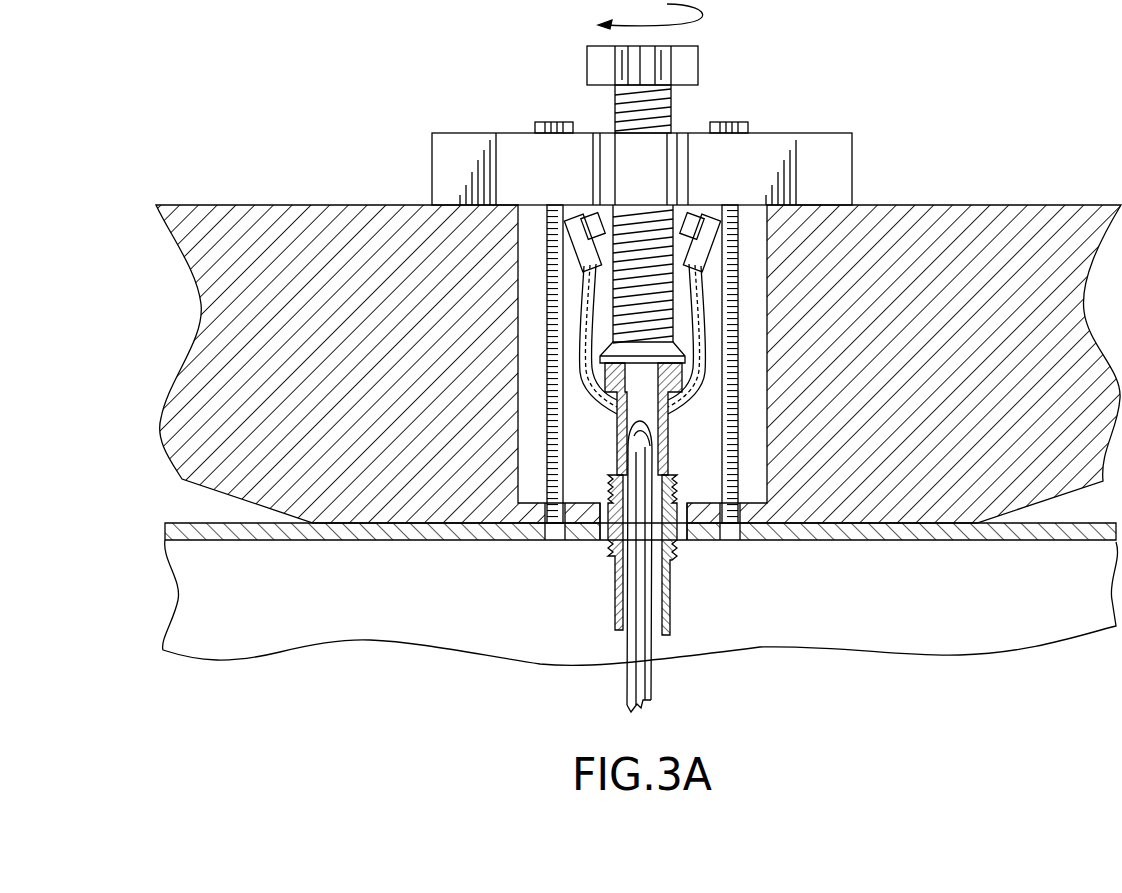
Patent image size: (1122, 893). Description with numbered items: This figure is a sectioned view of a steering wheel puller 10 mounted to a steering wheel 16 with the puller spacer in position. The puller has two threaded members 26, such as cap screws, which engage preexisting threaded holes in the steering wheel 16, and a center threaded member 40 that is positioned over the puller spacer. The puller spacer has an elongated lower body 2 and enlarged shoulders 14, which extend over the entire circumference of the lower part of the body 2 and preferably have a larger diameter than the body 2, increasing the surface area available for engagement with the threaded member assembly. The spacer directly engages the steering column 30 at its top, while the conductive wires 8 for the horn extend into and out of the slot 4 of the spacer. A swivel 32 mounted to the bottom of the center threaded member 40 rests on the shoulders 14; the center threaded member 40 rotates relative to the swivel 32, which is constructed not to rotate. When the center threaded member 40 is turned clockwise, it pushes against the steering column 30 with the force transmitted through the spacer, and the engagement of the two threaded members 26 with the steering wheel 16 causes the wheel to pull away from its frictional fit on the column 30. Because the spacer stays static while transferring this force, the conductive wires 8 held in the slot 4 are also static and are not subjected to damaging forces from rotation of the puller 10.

The body 2 is at (617, 442).
The slot 4 is at (645, 423).
The conductive wires 8 is at (642, 462).
The steering wheel puller 10 is at (833, 163).
The shoulders 14 is at (674, 415).
The steering wheel 16 is at (1000, 218).
The threaded members 26 is at (553, 515).
The steering column 30 is at (615, 557).
The swivel 32 is at (613, 352).
The center threaded member 40 is at (660, 108).